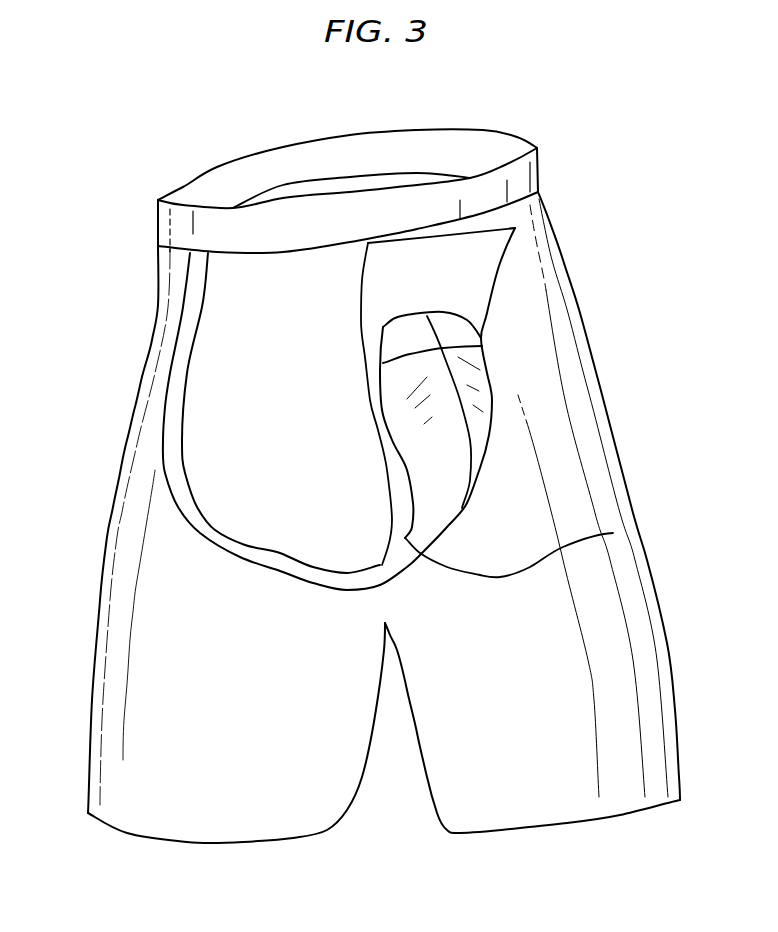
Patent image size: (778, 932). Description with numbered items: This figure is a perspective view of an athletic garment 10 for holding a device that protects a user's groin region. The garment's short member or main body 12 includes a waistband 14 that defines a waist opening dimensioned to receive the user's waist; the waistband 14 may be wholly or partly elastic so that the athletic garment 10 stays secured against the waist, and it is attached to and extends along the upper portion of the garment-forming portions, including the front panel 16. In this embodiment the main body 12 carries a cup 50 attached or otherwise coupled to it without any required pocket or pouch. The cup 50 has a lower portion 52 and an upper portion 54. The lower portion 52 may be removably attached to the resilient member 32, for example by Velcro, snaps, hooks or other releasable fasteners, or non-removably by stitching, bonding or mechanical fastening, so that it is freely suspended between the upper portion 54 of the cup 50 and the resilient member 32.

The athletic garment 10 is at (343, 97).
The main body 12 is at (562, 122).
The waistband 14 is at (182, 228).
The front panel 16 is at (240, 592).
The resilient member 32 is at (176, 444).
The cup 50 is at (493, 433).
The lower portion 52 is at (613, 533).
The upper portion 54 is at (453, 337).